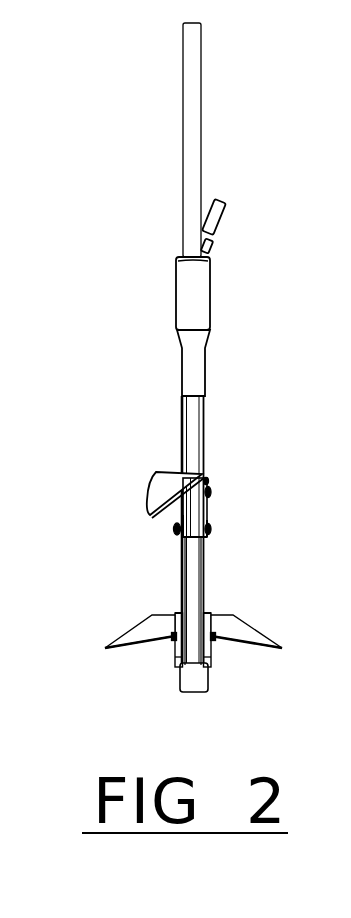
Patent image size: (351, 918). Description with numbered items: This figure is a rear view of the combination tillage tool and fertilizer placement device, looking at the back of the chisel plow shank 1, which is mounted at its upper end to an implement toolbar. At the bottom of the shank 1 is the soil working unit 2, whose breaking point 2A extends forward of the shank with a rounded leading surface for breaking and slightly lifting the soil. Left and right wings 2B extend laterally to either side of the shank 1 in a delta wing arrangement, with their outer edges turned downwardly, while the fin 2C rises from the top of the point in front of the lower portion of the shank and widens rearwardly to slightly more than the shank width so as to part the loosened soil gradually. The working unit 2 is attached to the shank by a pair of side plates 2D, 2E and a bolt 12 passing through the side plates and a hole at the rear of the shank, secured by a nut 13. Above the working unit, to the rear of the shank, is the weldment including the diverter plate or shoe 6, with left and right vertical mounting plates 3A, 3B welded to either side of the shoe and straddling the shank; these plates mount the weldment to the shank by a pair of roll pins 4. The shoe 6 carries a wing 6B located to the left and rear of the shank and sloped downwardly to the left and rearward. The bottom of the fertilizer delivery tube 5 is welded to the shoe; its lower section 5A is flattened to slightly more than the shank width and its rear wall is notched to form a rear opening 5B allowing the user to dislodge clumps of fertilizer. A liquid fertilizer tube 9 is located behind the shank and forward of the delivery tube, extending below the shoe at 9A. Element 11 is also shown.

The chisel plow shank 1 is at (183, 80).
The soil working unit 2 is at (189, 648).
The breaking point 2A is at (203, 691).
The wings 2B is at (130, 631).
The fin 2C is at (180, 563).
The side plate 2D is at (180, 613).
The side plate 2E is at (207, 613).
The left vertical mounting plate 3A is at (176, 540).
The right vertical mounting plate 3B is at (207, 540).
The roll pins 4 is at (210, 530).
The fertilizer delivery tube 5 is at (176, 297).
The lower section of delivery tube 5A is at (182, 365).
The rear opening 5B is at (181, 421).
The diverter plate 6 is at (128, 483).
The wing 6B is at (162, 482).
The liquid fertilizer tube 9 is at (212, 248).
The lower extension of liquid fertilizer tube 9A is at (177, 523).
The lever 11 is at (225, 217).
The bolt 12 is at (173, 640).
The nut 13 is at (216, 641).